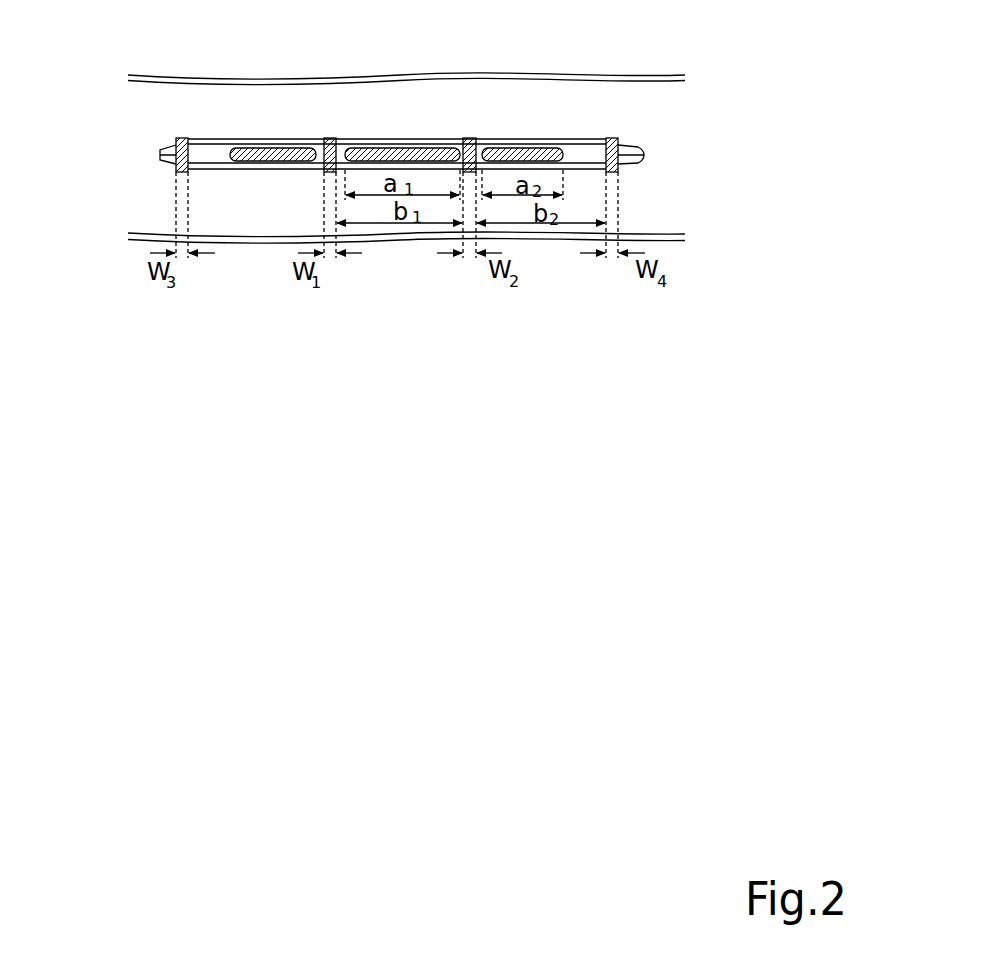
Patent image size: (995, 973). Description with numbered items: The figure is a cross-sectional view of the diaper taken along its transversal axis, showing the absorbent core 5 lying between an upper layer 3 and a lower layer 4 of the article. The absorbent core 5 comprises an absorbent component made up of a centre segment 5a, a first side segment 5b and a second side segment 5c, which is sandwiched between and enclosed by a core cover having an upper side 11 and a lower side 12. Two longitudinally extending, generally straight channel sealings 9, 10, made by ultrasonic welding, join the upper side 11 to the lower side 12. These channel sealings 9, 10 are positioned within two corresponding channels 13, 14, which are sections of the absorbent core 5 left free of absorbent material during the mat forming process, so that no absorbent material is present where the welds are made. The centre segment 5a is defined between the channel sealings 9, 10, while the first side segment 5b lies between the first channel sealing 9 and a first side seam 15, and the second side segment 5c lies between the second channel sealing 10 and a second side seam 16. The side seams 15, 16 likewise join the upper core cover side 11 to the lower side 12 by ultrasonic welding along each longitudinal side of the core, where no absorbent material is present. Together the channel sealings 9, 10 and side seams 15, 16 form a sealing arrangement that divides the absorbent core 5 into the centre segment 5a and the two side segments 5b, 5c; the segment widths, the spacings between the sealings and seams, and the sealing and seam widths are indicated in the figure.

The first plate 3 is at (158, 75).
The second plate 4 is at (135, 241).
The absorbent core 5 is at (127, 143).
The centre segment 5a is at (400, 148).
The first side segment 5b is at (291, 148).
The second side segment 5c is at (527, 148).
The first channel sealing 9 is at (323, 172).
The second channel sealing 10 is at (472, 140).
The upper side 11 is at (641, 148).
The lower side 12 is at (630, 167).
The first channel 13 is at (336, 142).
The second channel 14 is at (463, 143).
The first side seam 15 is at (176, 168).
The second side seam 16 is at (618, 139).